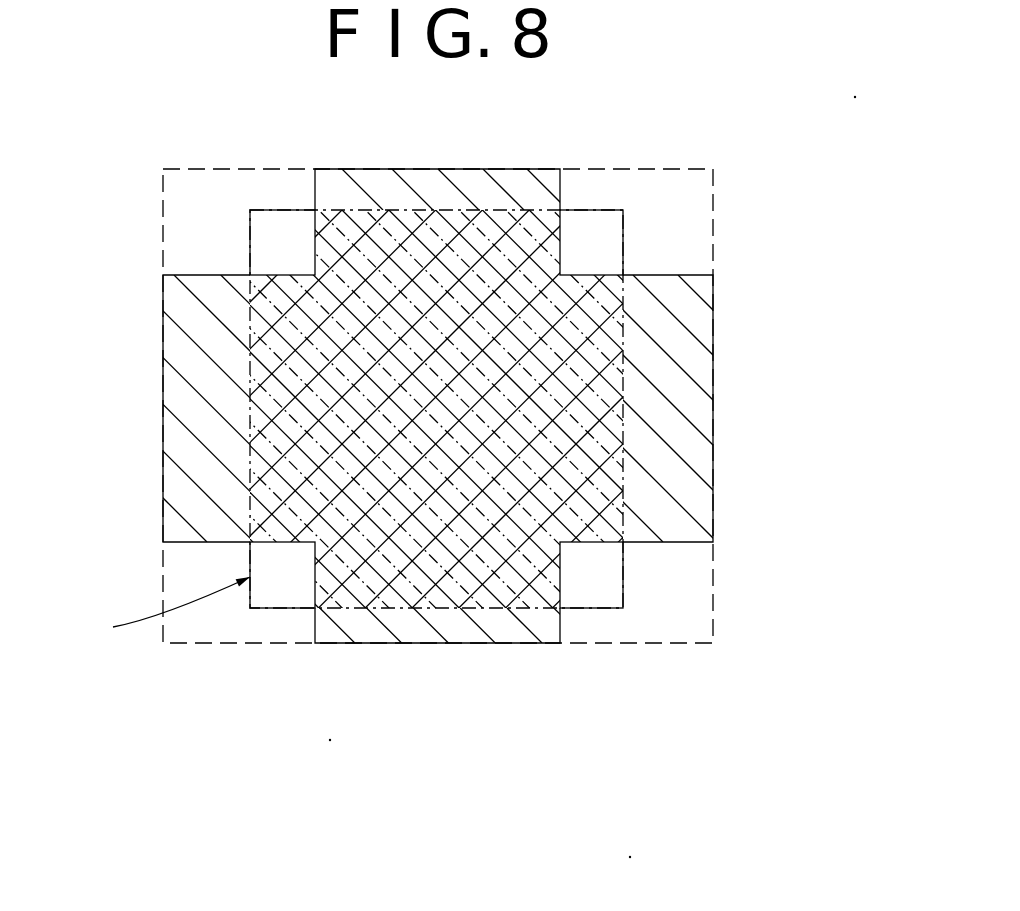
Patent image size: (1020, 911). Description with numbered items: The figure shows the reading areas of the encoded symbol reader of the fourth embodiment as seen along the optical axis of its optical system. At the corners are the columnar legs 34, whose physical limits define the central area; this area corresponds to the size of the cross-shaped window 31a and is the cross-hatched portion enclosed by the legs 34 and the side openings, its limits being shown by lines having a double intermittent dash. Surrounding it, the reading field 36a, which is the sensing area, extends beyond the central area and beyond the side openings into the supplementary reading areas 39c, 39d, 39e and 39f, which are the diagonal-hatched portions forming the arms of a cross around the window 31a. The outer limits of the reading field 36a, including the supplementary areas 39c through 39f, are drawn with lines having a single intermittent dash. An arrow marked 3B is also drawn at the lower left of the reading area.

The columnar legs 34 is at (275, 243).
The supplementary reading area 39d is at (433, 195).
The supplementary reading area 39f is at (455, 625).
The supplementary reading area 39e is at (183, 387).
The supplementary reading area 39c is at (683, 385).
The cross-shaped window 31a is at (552, 348).
The reading field 36a is at (692, 475).
The section view direction 3B is at (157, 613).